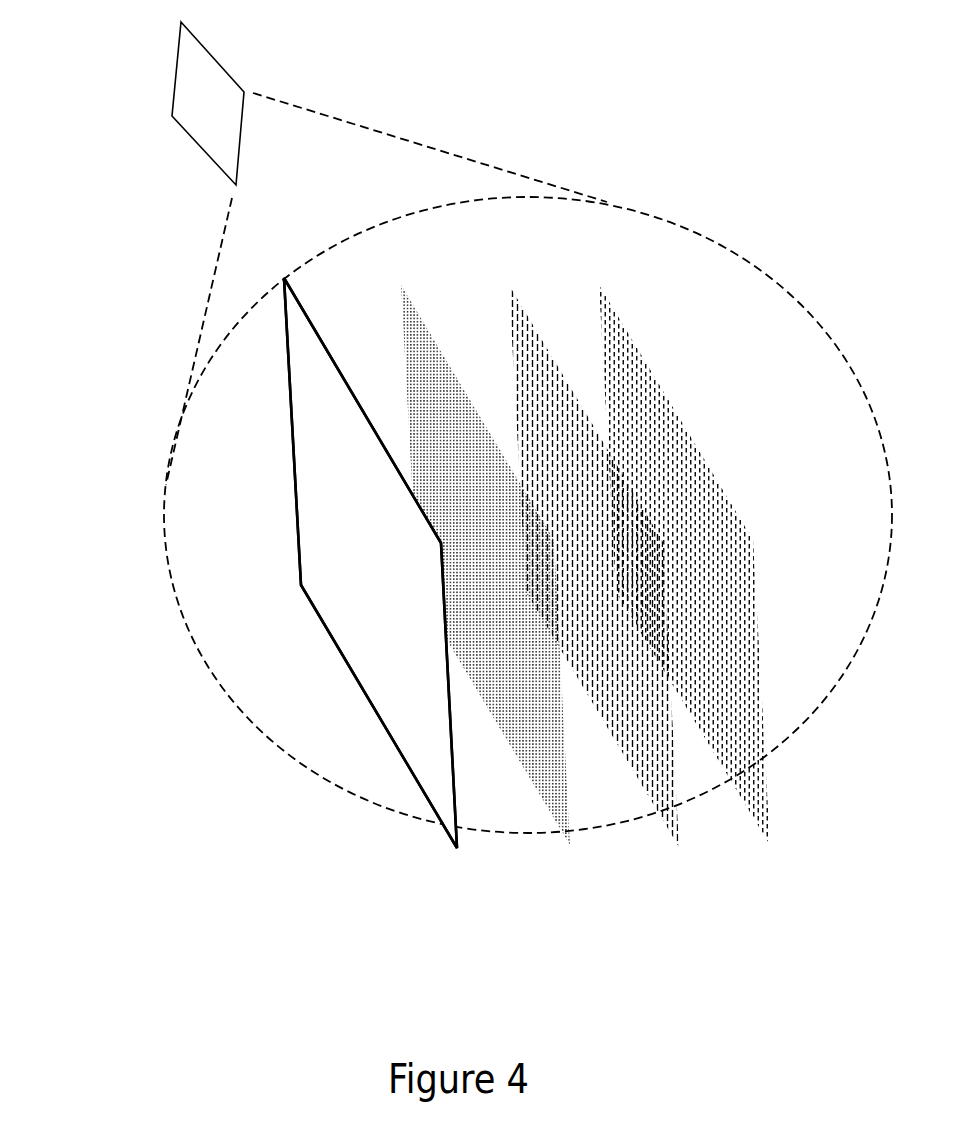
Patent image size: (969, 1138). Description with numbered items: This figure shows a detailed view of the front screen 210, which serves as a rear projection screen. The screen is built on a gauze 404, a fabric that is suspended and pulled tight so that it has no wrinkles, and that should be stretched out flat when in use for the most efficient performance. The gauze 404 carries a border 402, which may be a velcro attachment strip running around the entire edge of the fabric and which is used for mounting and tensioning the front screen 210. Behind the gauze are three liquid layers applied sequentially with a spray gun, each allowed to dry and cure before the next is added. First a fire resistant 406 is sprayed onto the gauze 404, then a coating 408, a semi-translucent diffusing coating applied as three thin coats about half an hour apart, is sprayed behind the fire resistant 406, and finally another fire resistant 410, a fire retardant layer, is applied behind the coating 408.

The front screen 210 is at (203, 152).
The border 402 is at (288, 357).
The gauze 404 is at (313, 425).
The fire resistant 406 is at (530, 722).
The coating 408 is at (647, 722).
The fire resistant 410 is at (735, 722).